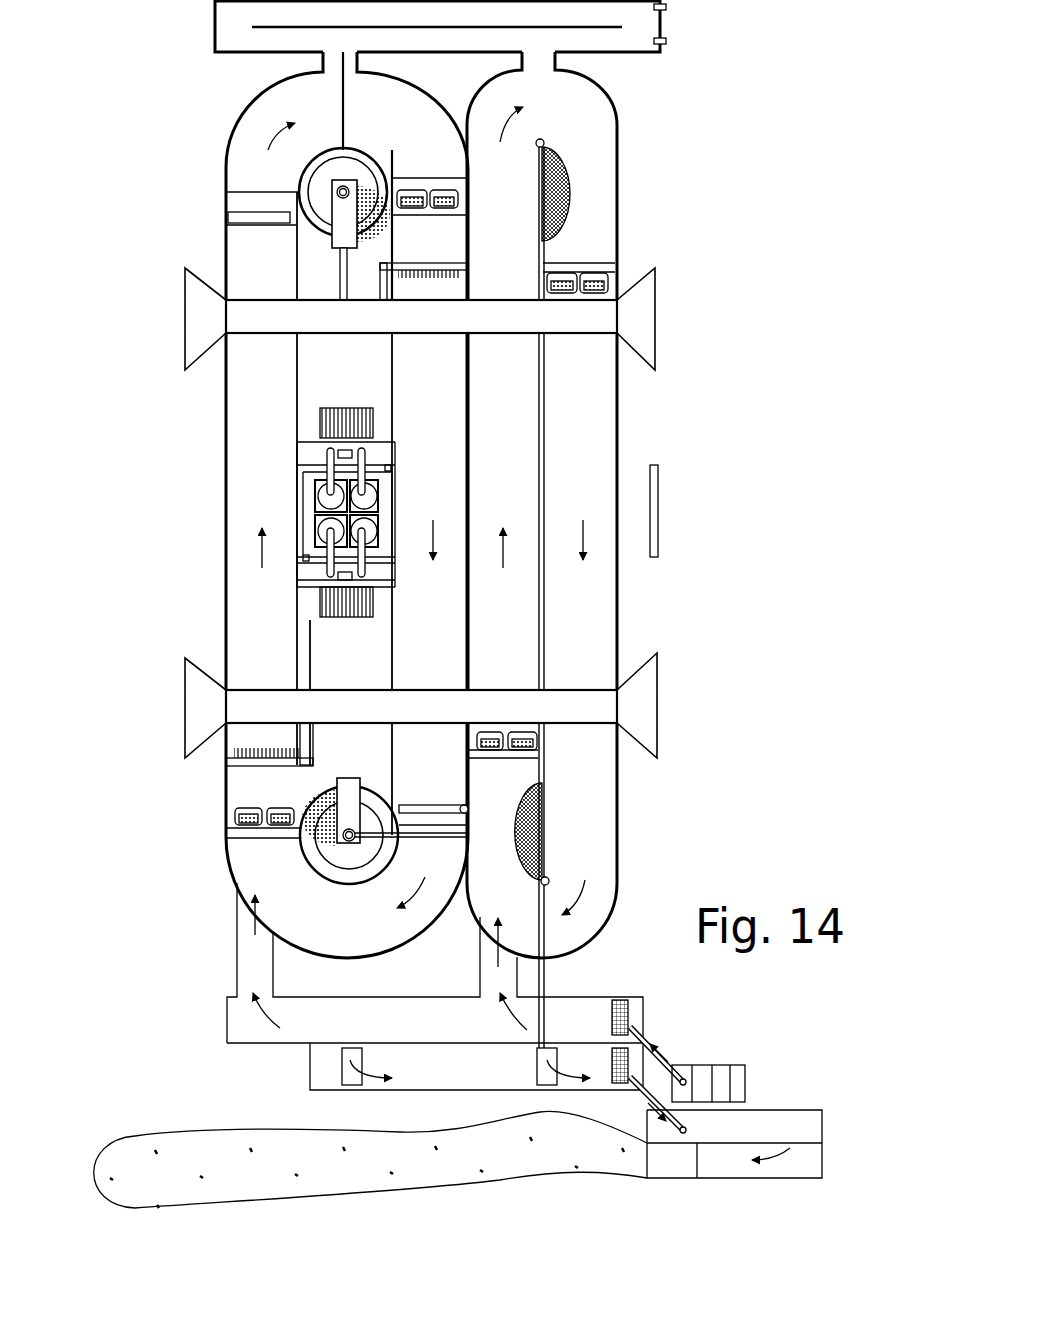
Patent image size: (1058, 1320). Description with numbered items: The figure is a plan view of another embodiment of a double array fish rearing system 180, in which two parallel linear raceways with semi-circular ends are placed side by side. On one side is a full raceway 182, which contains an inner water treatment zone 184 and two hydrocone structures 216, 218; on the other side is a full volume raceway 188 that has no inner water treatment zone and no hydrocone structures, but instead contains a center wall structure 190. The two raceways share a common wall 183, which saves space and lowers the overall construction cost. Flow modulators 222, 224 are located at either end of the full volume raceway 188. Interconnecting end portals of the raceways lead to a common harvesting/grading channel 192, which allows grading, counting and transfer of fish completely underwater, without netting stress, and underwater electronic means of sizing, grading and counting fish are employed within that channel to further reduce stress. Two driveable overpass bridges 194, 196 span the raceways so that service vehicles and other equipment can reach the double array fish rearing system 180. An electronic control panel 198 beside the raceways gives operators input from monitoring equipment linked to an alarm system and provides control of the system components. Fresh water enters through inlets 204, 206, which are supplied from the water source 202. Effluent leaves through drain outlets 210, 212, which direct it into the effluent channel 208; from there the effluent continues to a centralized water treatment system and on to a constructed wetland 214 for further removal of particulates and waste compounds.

The double array fish rearing system 180 is at (143, 100).
The full raceway 182 is at (185, 193).
The common wall 183 is at (467, 397).
The inner water treatment zone 184 is at (345, 653).
The full volume raceway 188 is at (598, 218).
The center wall structure 190 is at (543, 398).
The common harvesting/grading channel 192 is at (613, 43).
The driveable overpass bridge 194 is at (635, 310).
The driveable overpass bridge 196 is at (642, 706).
The electronic control panel 198 is at (655, 503).
The water source 202 is at (697, 1077).
The inlet 204 is at (253, 962).
The inlet 206 is at (505, 975).
The effluent channel 208 is at (277, 1063).
The drain outlet 210 is at (352, 1083).
The drain outlet 212 is at (548, 1083).
The constructed wetland 214 is at (180, 1147).
The hydrocone structure 216 is at (320, 198).
The hydrocone structure 218 is at (328, 848).
The flow modulator 222 is at (562, 170).
The flow modulator 224 is at (542, 838).